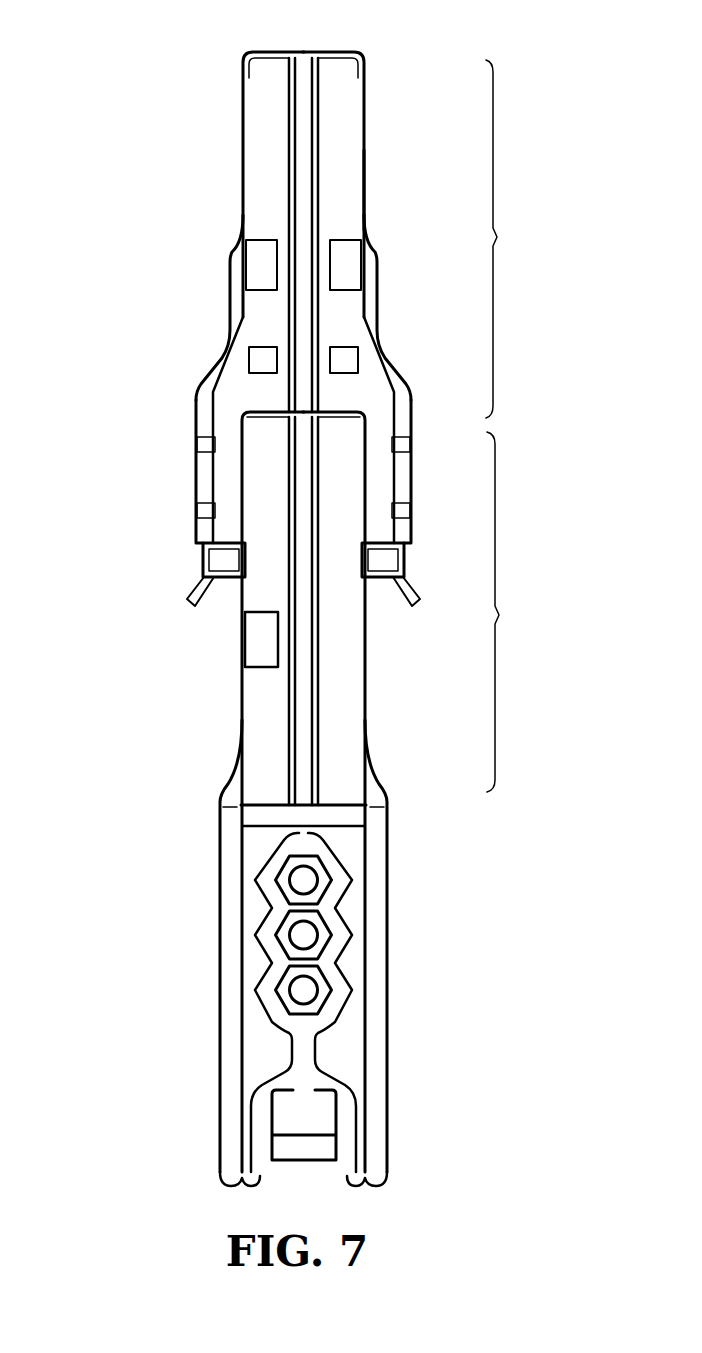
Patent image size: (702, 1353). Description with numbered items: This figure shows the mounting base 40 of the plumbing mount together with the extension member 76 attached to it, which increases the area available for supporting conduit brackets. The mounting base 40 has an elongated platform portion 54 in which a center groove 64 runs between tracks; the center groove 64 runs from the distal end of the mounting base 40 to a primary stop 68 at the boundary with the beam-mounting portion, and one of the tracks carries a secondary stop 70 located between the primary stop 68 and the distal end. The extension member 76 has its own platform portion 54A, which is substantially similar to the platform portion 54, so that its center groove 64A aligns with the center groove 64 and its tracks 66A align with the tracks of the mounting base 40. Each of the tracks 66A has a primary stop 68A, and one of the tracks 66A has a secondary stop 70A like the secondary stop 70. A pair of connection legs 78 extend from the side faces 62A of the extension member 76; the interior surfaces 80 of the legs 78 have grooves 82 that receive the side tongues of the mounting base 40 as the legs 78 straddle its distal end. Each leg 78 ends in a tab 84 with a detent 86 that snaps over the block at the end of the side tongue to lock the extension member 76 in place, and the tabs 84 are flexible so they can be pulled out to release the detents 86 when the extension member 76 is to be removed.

The mounting base 40 is at (364, 666).
The platform portion 54 is at (289, 749).
The platform portion 54A is at (330, 209).
The side faces 62A is at (243, 128).
The center groove 64 is at (300, 438).
The center groove 64A is at (303, 62).
The tracks 66A is at (257, 173).
The primary stop 68 is at (260, 800).
The primary stop 68A is at (243, 352).
The secondary stop 70 is at (258, 670).
The secondary stop 70A is at (248, 231).
The extension member 76 is at (364, 188).
The connection legs 78 is at (188, 420).
The interior surfaces 80 is at (258, 482).
The grooves 82 is at (238, 440).
The tab 84 is at (204, 556).
The detent 86 is at (208, 585).